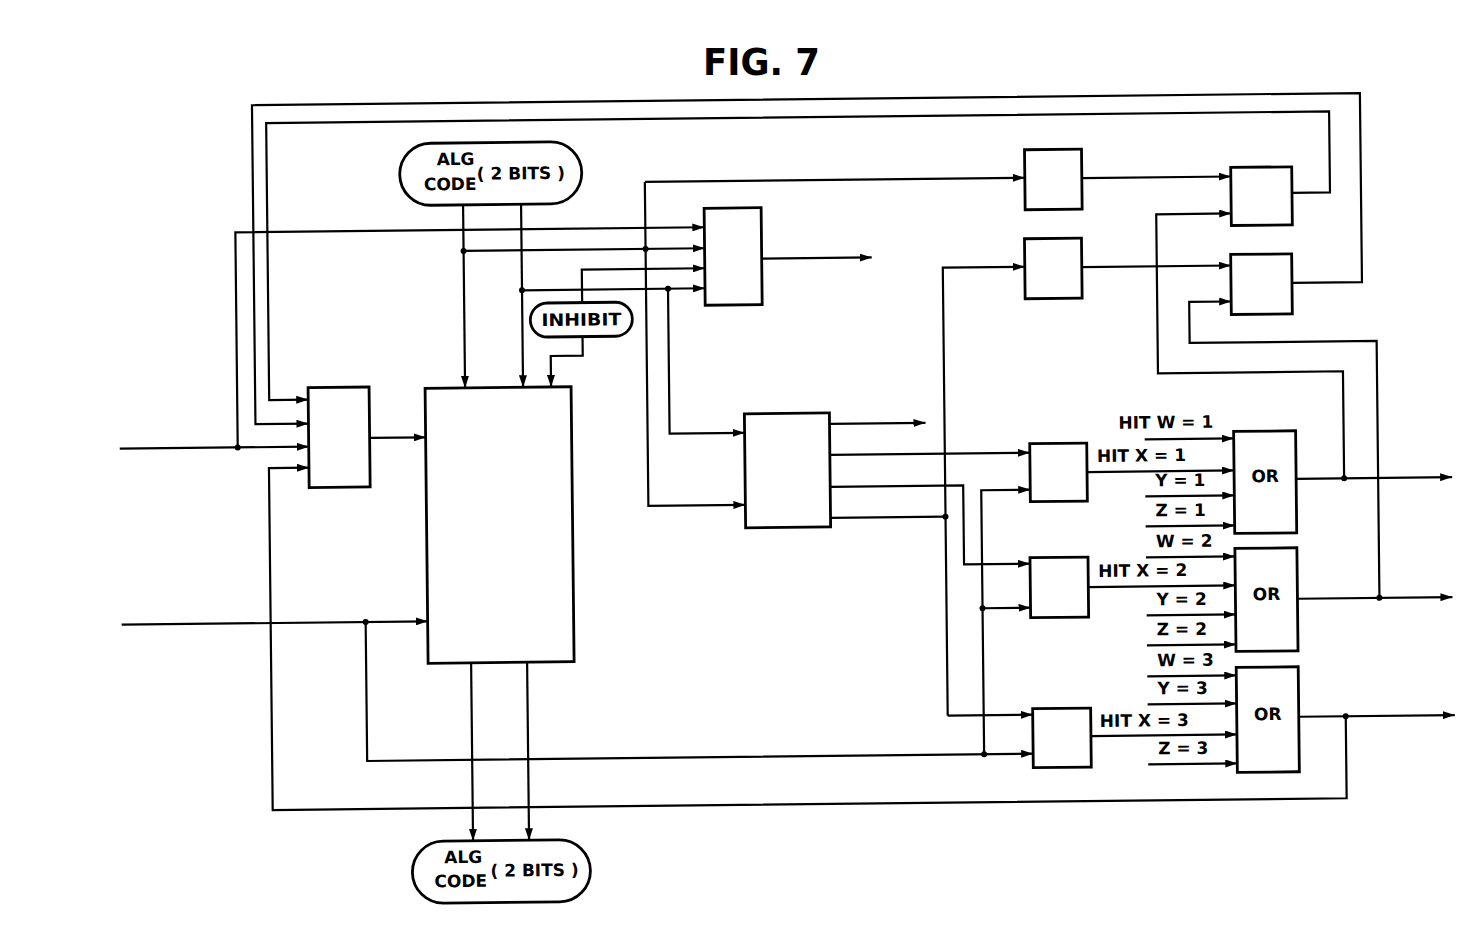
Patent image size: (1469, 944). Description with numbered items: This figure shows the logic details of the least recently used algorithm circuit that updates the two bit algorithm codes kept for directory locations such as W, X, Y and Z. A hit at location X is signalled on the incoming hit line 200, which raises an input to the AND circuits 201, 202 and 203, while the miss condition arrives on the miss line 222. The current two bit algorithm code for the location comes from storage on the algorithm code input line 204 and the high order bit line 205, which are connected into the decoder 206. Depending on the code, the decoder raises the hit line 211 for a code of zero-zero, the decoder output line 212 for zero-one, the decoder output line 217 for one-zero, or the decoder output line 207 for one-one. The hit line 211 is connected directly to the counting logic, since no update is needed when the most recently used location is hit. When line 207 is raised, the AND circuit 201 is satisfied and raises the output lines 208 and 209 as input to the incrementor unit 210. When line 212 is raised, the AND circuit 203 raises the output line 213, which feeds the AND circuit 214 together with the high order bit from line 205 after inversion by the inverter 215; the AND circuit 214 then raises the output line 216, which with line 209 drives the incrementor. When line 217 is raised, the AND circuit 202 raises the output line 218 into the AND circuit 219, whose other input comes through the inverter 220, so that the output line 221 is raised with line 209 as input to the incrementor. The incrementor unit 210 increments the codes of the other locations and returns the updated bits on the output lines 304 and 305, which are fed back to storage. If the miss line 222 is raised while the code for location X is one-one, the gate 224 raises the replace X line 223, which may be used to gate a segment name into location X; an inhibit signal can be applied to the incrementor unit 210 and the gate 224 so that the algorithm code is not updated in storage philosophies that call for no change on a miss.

The incoming hit line 200 is at (210, 619).
The AND circuit 201 is at (1067, 711).
The AND circuit 202 is at (1054, 557).
The AND circuit 203 is at (1055, 444).
The algorithm code input line 204 is at (527, 219).
The high order bit line 205 is at (465, 219).
The decoder 206 is at (807, 528).
The decoder output line 207 is at (939, 621).
The output line 208 is at (976, 808).
The output line 209 is at (388, 436).
The incrementor unit 210 is at (570, 619).
The hit line 211 is at (904, 420).
The decoder output line 212 is at (965, 453).
The output line 213 is at (1269, 379).
The AND circuit 214 is at (1271, 173).
The inverter 215 is at (1085, 167).
The output line 216 is at (1152, 118).
The decoder output line 217 is at (961, 550).
The output line 218 is at (1309, 346).
The AND circuit 219 is at (1291, 264).
The inverter 220 is at (1084, 256).
The output line 221 is at (1069, 97).
The miss line 222 is at (185, 442).
The replace X line 223 is at (820, 269).
The gate 224 is at (757, 305).
The output line 304 is at (528, 825).
The output line 305 is at (464, 825).